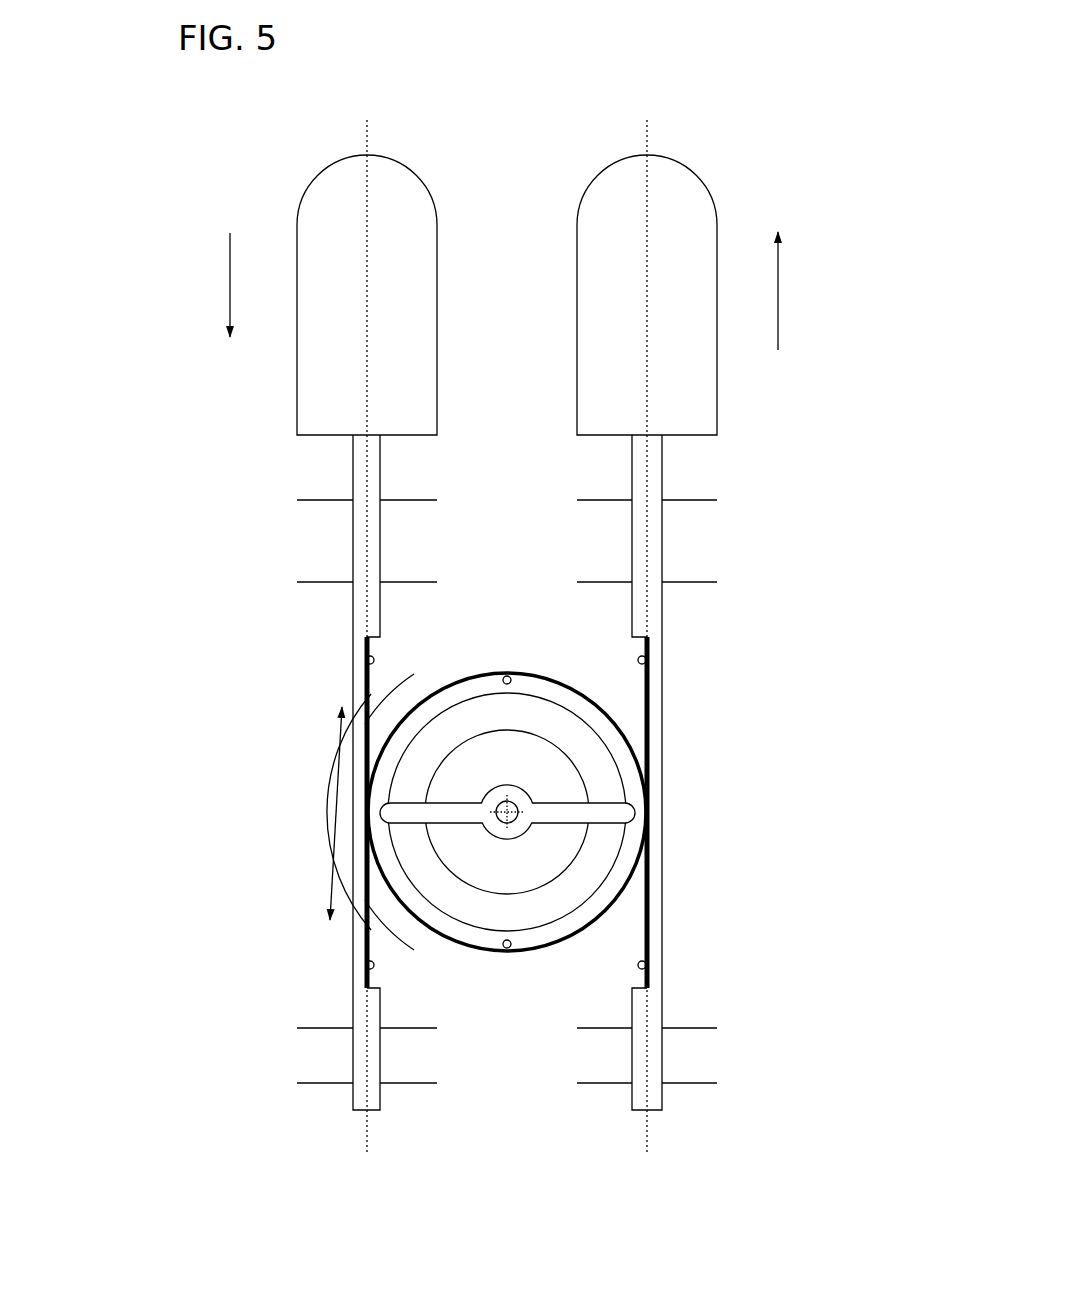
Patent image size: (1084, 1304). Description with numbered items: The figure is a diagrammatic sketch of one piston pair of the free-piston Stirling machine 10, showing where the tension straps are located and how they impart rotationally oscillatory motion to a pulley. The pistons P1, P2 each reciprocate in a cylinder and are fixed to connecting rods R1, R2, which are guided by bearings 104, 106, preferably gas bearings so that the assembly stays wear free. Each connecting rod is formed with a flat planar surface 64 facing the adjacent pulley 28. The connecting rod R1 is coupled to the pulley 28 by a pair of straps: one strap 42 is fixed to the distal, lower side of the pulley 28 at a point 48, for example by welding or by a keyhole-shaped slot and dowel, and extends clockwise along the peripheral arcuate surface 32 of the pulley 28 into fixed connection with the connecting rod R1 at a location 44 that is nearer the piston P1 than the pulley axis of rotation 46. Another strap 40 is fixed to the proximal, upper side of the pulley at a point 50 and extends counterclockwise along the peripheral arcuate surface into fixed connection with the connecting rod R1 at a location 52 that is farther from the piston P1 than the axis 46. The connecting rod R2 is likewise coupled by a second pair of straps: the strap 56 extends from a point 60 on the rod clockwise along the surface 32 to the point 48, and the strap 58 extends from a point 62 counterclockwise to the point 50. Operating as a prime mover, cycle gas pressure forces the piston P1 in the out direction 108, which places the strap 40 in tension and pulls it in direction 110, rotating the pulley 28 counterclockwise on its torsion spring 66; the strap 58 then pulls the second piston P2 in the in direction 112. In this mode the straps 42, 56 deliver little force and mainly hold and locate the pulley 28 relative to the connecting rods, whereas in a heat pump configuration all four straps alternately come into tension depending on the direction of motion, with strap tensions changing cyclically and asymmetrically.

The free-piston Stirling machine 10 is at (722, 125).
The piston P1 is at (327, 397).
The piston P2 is at (691, 398).
The connecting rod R1 is at (332, 781).
The connecting rod R2 is at (701, 778).
The bearing 104 is at (350, 537).
The bearing 106 is at (675, 541).
The out direction 108 is at (237, 305).
The in direction 112 is at (780, 274).
The direction of strap pull 110 is at (325, 888).
The flat planar surface 64 is at (365, 683).
The location 44 is at (366, 660).
The location 52 is at (366, 967).
The point 60 is at (638, 660).
The point 62 is at (640, 985).
The strap 56 is at (633, 700).
The strap 58 is at (570, 685).
The pulley 28 is at (545, 775).
The point 50 is at (512, 675).
The peripheral arcuate surface 32 is at (458, 935).
The point 48 is at (507, 955).
The pulley axis of rotation 46 is at (500, 810).
The torsion spring 66 is at (521, 821).
The strap 42 is at (372, 700).
The strap 40 is at (440, 698).